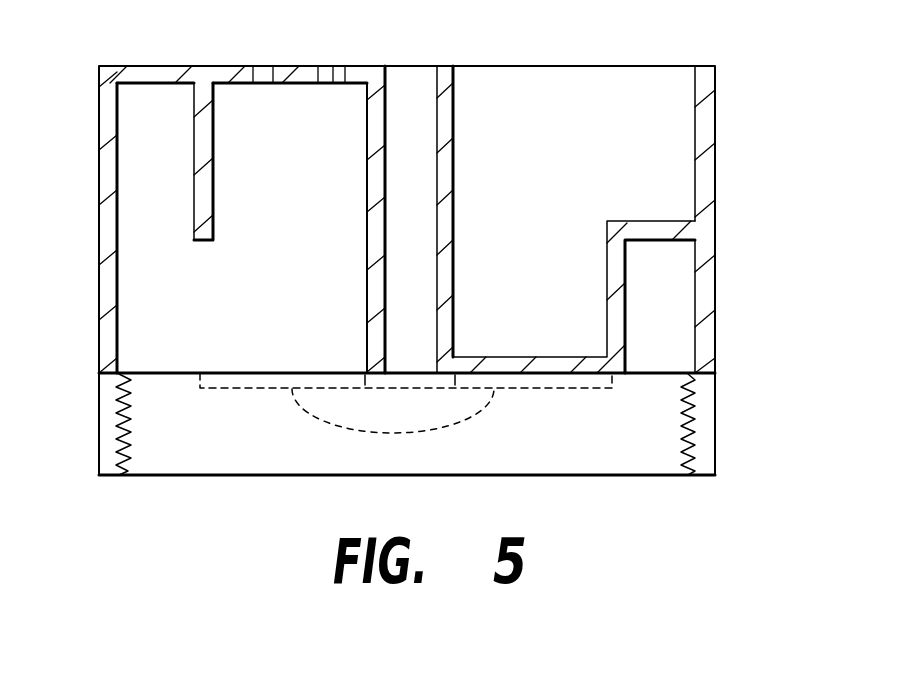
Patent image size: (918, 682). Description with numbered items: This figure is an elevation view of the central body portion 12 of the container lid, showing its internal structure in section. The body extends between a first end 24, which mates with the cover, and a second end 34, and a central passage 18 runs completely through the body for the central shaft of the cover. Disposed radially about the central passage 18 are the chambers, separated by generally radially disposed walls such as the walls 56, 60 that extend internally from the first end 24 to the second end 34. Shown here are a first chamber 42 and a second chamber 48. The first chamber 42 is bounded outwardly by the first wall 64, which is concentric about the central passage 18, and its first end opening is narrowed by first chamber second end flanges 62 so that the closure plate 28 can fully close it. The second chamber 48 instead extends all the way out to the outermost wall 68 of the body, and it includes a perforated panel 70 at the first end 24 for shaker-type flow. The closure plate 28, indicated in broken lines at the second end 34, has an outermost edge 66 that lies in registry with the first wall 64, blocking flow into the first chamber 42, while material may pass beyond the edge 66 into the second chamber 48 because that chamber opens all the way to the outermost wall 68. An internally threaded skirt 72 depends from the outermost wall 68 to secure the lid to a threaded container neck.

The central body portion 12 is at (688, 580).
The central passage 18 is at (430, 232).
The first end 24 is at (577, 66).
The closure plate 28 is at (393, 420).
The second end 34 is at (180, 375).
The first chamber 42 is at (555, 200).
The second chamber 48 is at (218, 310).
The radially disposed wall 56 is at (250, 233).
The radially disposed wall 60 is at (548, 108).
The first chamber second end flanges 62 is at (538, 356).
The first wall 64 is at (607, 284).
The outermost edge 66 is at (197, 343).
The outermost wall 68 is at (98, 173).
The perforated panel 70 is at (283, 28).
The internally threaded skirt 72 is at (718, 432).